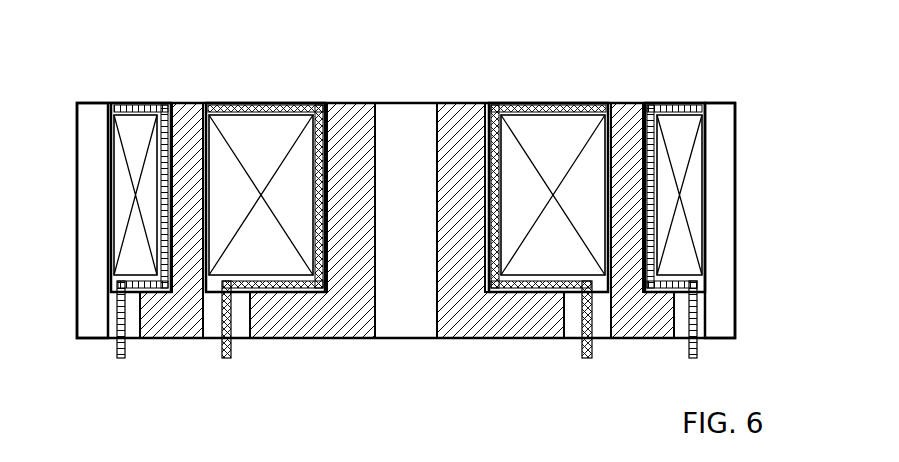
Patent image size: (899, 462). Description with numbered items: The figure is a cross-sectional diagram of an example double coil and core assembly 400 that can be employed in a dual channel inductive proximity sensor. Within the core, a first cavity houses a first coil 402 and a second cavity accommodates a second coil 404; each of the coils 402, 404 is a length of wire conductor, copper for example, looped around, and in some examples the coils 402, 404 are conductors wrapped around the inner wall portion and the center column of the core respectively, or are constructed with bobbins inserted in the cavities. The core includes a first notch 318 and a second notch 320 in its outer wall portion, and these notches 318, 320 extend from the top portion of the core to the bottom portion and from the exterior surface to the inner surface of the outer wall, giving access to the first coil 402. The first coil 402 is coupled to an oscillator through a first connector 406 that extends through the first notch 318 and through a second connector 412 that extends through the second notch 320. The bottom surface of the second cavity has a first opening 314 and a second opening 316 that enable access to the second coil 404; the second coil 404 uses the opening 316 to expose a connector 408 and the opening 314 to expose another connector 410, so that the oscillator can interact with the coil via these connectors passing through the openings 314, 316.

The double coil and core assembly 400 is at (722, 52).
The first coil 402 is at (120, 103).
The second coil 404 is at (265, 103).
The first connector 406 is at (123, 360).
The connector 408 is at (230, 360).
The connector 410 is at (590, 360).
The second connector 412 is at (695, 360).
The first opening 314 is at (570, 334).
The second opening 316 is at (245, 336).
The first notch 318 is at (91, 255).
The second notch 320 is at (722, 238).